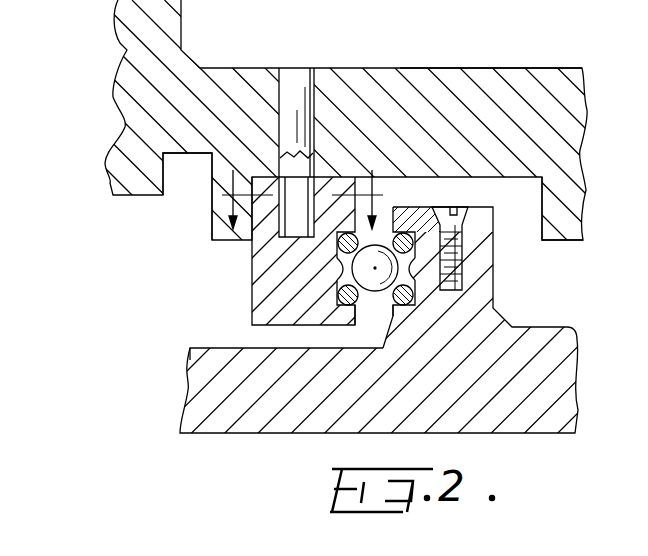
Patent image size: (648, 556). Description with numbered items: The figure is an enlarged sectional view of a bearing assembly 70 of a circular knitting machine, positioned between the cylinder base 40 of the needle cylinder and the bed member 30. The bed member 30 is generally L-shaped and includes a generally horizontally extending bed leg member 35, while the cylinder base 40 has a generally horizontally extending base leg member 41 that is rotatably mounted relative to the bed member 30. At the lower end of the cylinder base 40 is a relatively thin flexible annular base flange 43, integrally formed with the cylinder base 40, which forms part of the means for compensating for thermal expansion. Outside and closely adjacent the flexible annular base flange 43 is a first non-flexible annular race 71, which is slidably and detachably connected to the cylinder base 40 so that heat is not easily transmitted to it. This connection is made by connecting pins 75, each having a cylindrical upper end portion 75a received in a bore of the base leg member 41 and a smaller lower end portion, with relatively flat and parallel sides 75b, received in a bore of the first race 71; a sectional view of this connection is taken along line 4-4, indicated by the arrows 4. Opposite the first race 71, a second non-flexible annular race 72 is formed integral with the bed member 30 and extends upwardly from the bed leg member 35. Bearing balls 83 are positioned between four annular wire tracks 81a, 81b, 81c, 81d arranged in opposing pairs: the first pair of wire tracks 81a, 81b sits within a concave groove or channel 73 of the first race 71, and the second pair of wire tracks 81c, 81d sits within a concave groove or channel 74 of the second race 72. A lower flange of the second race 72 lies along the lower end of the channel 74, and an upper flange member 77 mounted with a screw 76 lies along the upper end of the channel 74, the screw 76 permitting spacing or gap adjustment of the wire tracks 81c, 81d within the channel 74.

The bed member 30 is at (267, 434).
The bed leg member 35 is at (210, 375).
The cylinder base 40 is at (128, 50).
The base leg member 41 is at (459, 80).
The flexible annular base flange 43 is at (212, 207).
The section line 4- 4 is at (302, 187).
The bearing assembly 70 is at (363, 313).
The first non-flexible annular race 71 is at (252, 255).
The second non-flexible annular race 72 is at (482, 268).
The concave groove or channel 73 is at (337, 268).
The concave groove or channel 74 is at (452, 264).
The connecting pin 75 is at (295, 73).
The cylindrical upper end portion 75a is at (320, 97).
The relatively flat and parallel sides 75b is at (280, 220).
The screw 76 is at (460, 207).
The upper flange member 77 is at (490, 220).
The annular wire track 81a is at (340, 303).
The annular wire track 81b is at (348, 233).
The annular wire track 81c is at (400, 233).
The annular wire track 81d is at (410, 302).
The bearing ball 83 is at (377, 292).